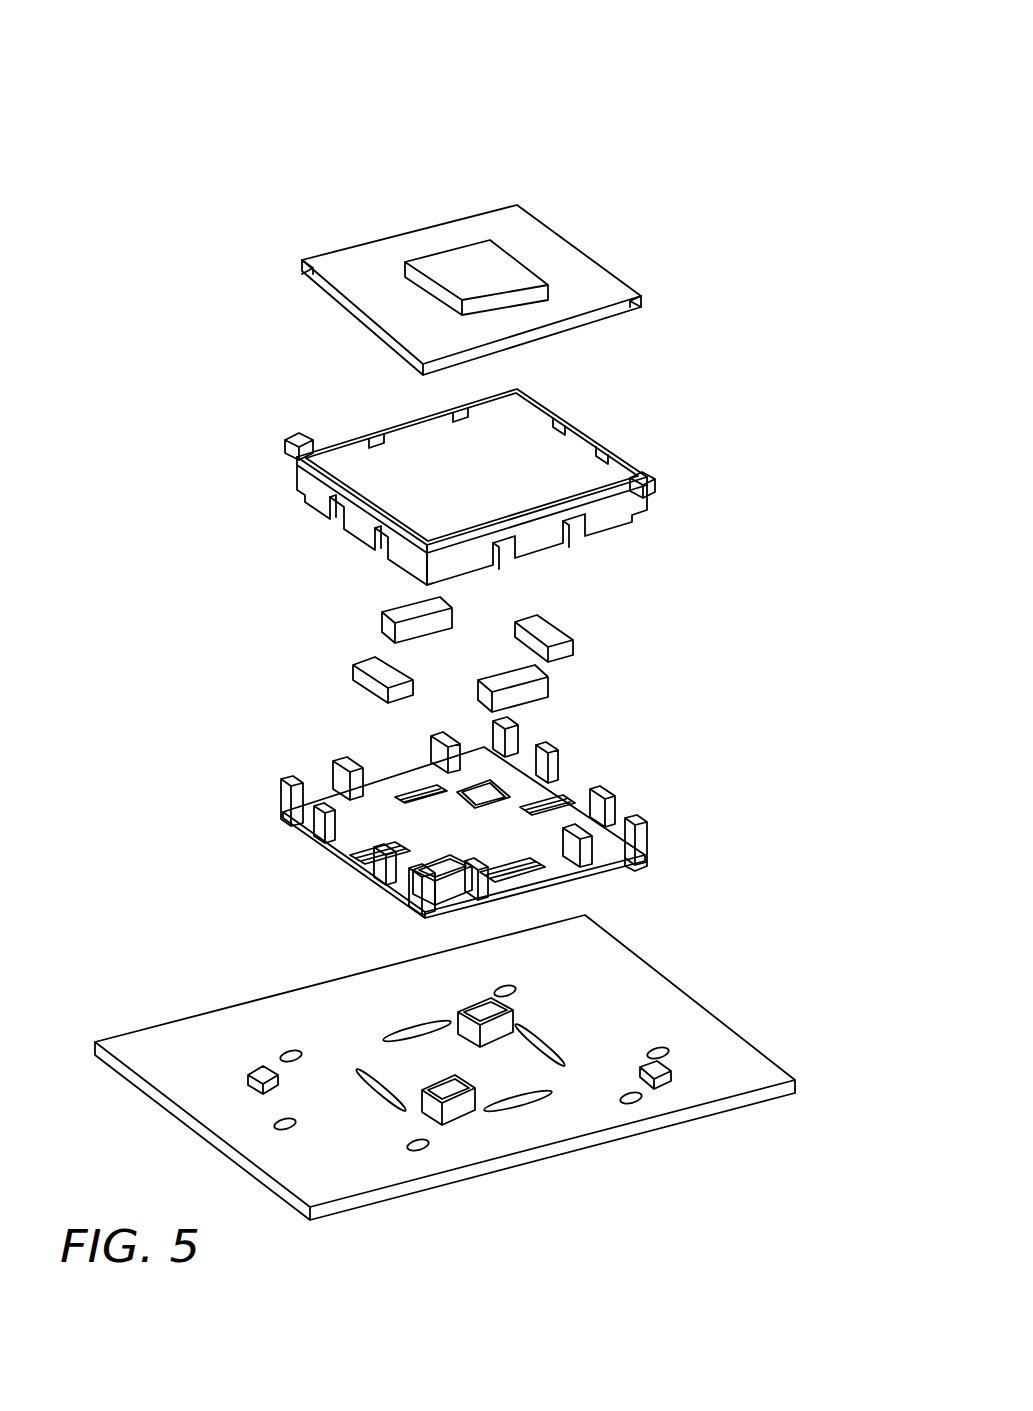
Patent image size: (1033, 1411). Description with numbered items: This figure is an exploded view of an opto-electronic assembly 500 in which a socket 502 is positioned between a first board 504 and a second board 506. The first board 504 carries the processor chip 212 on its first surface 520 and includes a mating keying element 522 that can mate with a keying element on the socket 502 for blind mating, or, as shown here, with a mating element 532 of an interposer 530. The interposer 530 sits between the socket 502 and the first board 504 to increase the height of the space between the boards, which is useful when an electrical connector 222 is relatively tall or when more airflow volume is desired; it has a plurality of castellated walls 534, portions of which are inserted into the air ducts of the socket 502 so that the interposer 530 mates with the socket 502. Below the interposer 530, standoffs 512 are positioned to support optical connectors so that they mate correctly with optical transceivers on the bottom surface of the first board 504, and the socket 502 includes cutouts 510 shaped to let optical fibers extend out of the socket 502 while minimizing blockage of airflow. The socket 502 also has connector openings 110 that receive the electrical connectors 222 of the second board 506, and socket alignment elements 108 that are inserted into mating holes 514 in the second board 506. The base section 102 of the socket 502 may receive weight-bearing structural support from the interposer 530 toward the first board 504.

The opto-electronic assembly 500 is at (394, 96).
The first board 504 is at (461, 241).
The first surface 520 is at (528, 242).
The mating keying element 522 is at (297, 273).
The processor chip 212 is at (450, 250).
The interposer 530 is at (473, 475).
The mating element 532 is at (399, 432).
The castellated walls 534 is at (353, 523).
The standoffs 512 is at (352, 689).
The socket 502 is at (461, 813).
The connector openings 110 is at (497, 783).
The cutouts 510 is at (375, 834).
The socket alignment elements 108 is at (647, 853).
The base section 102 is at (403, 898).
The second board 506 is at (463, 1085).
The mating holes 514 is at (641, 1098).
The electrical connectors 222 is at (473, 1118).